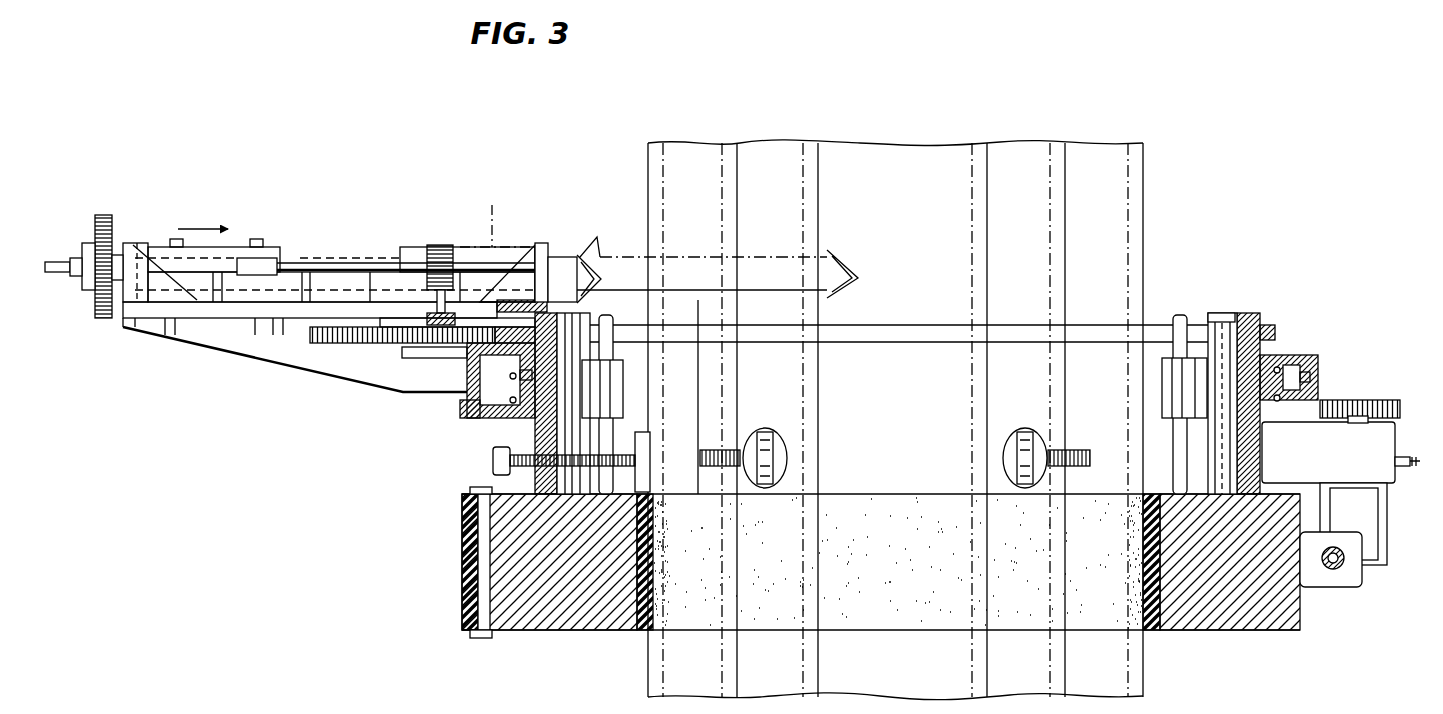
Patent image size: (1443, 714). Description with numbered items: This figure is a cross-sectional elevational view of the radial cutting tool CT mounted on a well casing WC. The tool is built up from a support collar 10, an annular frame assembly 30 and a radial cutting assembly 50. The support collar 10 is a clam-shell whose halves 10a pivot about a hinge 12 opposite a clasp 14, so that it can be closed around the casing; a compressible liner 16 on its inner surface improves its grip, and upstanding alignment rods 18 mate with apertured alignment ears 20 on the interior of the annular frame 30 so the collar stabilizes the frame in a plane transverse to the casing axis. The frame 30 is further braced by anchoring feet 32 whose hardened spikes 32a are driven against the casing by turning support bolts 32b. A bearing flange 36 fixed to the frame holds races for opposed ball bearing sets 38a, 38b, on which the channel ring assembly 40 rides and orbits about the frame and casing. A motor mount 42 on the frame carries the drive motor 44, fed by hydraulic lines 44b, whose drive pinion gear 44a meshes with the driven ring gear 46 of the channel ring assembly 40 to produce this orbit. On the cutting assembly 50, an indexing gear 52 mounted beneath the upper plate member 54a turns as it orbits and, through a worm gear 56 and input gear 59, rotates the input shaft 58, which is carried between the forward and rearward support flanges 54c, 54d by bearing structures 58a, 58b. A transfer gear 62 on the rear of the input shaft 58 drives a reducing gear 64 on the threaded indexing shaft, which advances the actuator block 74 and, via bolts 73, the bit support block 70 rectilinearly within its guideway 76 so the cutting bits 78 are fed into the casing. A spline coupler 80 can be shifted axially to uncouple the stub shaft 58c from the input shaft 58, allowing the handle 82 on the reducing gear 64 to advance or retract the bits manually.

The support collar 10 is at (560, 635).
The halves 10a is at (552, 592).
The hinge 12 is at (478, 580).
The clasp 14 is at (1335, 572).
The compressible liner 16 is at (881, 569).
The alignment rods 18 is at (612, 322).
The alignment ears 20 is at (625, 382).
The annular frame assembly 30 is at (886, 415).
The anchoring feet 32 is at (650, 440).
The hardened spikes 32a is at (650, 470).
The support bolts 32b is at (738, 450).
The bearing flange 36 is at (483, 430).
The ball bearings 38a is at (463, 393).
The ball bearings 38b is at (495, 442).
The channel ring assembly 40 is at (458, 378).
The motor mount 42 is at (1353, 472).
The drive motor 44 is at (1341, 525).
The drive pinion gear 44a is at (1383, 420).
The hydraulic lines 44b is at (1413, 470).
The driven ring gear 46 is at (460, 418).
The radial cutting assembly 50 is at (243, 378).
The indexing gear 52 is at (355, 358).
The upper plate member 54a is at (172, 318).
The forward support flange 54c is at (541, 243).
The rearward support flange 54d is at (133, 243).
The worm gear 56 is at (448, 252).
The input shaft 58 is at (355, 265).
The bearing structure 58a is at (562, 257).
The bearing structure 58b is at (128, 320).
The stub shaft 58c is at (205, 275).
The input gear 59 is at (437, 245).
The transfer gear 62 is at (90, 243).
The reducing gear 64 is at (104, 215).
The bit support block 70 is at (785, 257).
The bolts 73 is at (176, 239).
The actuator block 74 is at (243, 240).
The guideway 76 is at (333, 272).
The cutting bits 78 is at (594, 258).
The spline coupler 80 is at (277, 262).
The handle 82 is at (66, 275).
The well casing WC is at (1115, 130).
The radial cutting tool CT is at (333, 520).